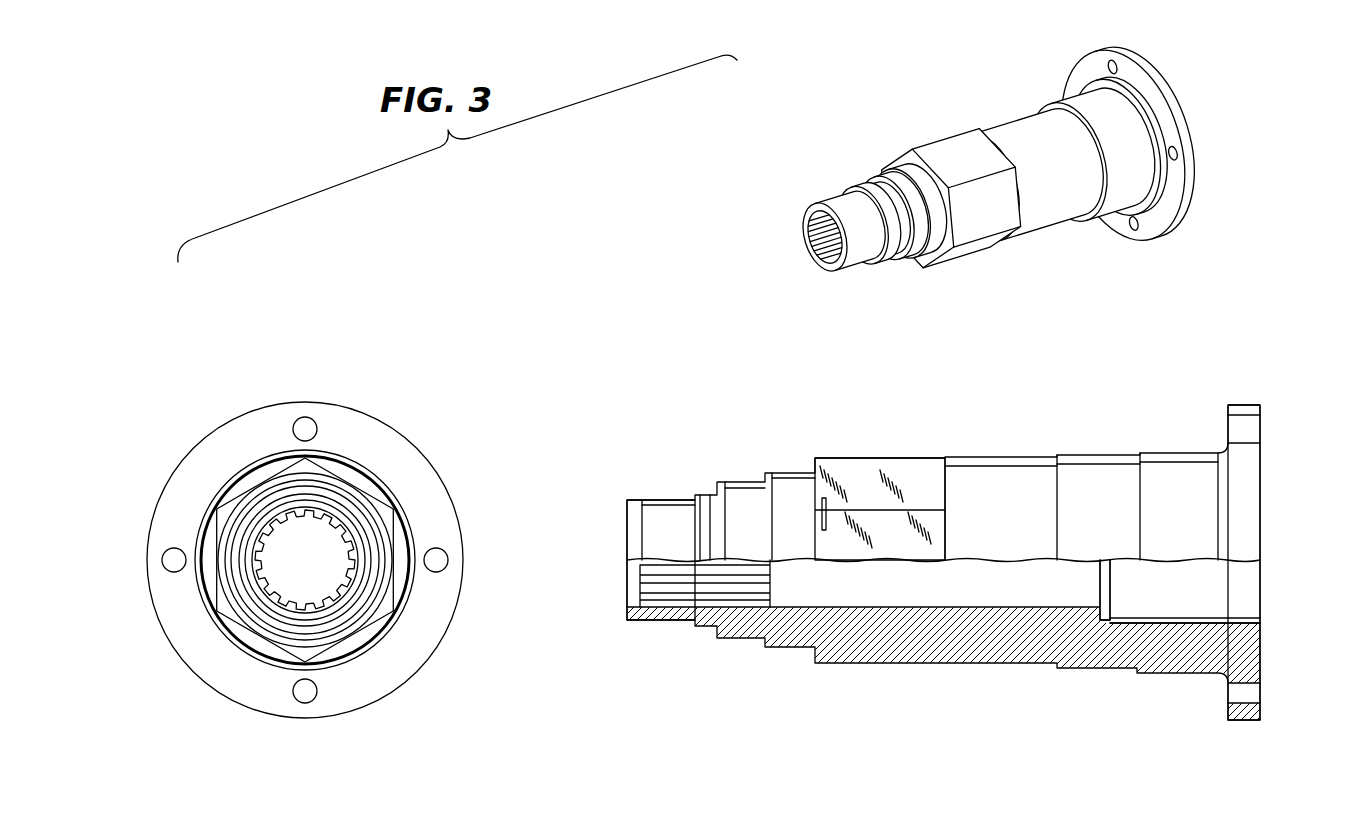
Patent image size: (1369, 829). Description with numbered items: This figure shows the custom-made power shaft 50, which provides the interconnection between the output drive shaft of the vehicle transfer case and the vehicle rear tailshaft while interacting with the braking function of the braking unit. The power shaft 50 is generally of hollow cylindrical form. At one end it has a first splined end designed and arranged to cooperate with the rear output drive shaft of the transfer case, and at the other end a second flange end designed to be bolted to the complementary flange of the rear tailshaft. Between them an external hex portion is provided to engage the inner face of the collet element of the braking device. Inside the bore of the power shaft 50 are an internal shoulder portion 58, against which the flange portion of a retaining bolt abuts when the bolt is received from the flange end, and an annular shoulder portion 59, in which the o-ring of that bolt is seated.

The power shaft 50 is at (918, 110).
The internal shoulder portion 58 is at (1112, 621).
The annular shoulder portion 59 is at (1106, 617).